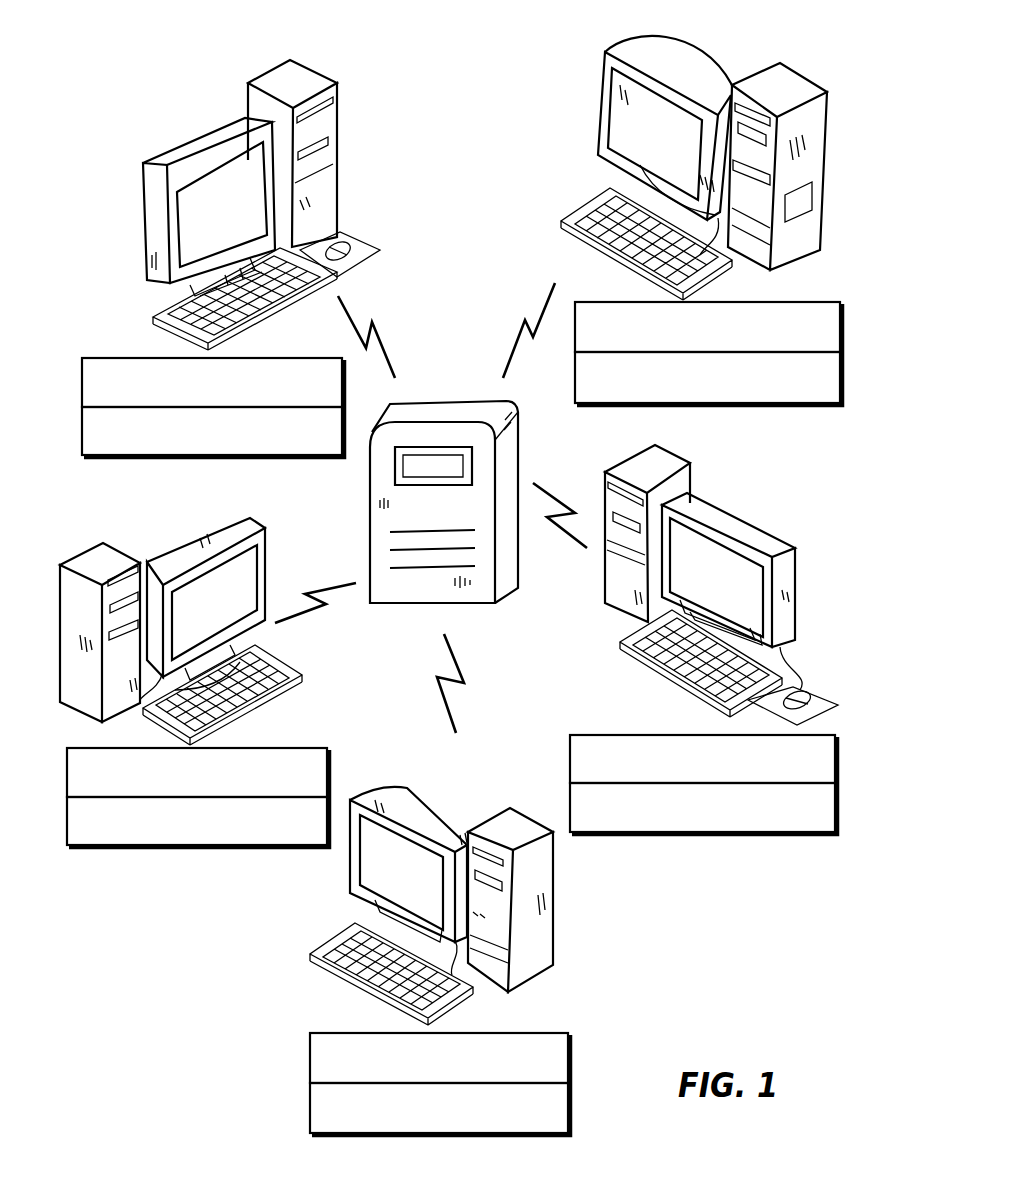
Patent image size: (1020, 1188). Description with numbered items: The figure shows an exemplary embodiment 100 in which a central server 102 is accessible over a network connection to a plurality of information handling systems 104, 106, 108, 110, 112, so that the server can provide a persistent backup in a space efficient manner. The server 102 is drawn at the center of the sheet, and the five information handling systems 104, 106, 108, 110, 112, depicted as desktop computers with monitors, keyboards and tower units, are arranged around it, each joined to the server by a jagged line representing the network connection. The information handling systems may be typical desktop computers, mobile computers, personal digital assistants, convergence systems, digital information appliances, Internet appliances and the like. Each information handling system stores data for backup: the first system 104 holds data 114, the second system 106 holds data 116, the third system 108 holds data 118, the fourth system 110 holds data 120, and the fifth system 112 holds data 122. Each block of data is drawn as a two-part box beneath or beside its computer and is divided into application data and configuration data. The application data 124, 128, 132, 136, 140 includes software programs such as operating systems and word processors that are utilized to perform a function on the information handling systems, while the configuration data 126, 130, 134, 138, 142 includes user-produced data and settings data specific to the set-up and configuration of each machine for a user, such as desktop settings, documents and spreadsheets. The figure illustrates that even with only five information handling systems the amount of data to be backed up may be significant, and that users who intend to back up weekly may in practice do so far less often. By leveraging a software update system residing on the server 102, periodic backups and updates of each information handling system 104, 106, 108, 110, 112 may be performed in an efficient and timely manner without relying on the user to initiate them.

The exemplary embodiment 100 is at (172, 996).
The server 102 is at (485, 400).
The information handling system 104 is at (190, 135).
The information handling system 106 is at (828, 97).
The information handling system 108 is at (770, 535).
The information handling system 110 is at (428, 792).
The information handling system 112 is at (108, 541).
The data 114 is at (90, 342).
The data 116 is at (828, 297).
The data 118 is at (852, 737).
The data 120 is at (298, 1031).
The data 122 is at (58, 750).
The application data 124 is at (82, 380).
The configuration data 126 is at (82, 430).
The application data 128 is at (845, 318).
The configuration data 130 is at (845, 368).
The application data 132 is at (838, 750).
The configuration data 134 is at (838, 800).
The application data 136 is at (310, 1058).
The configuration data 138 is at (310, 1108).
The application data 140 is at (67, 770).
The configuration data 142 is at (67, 820).